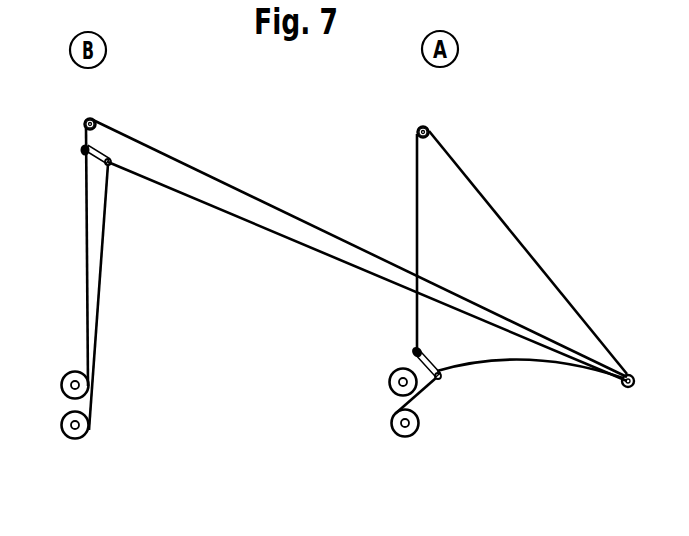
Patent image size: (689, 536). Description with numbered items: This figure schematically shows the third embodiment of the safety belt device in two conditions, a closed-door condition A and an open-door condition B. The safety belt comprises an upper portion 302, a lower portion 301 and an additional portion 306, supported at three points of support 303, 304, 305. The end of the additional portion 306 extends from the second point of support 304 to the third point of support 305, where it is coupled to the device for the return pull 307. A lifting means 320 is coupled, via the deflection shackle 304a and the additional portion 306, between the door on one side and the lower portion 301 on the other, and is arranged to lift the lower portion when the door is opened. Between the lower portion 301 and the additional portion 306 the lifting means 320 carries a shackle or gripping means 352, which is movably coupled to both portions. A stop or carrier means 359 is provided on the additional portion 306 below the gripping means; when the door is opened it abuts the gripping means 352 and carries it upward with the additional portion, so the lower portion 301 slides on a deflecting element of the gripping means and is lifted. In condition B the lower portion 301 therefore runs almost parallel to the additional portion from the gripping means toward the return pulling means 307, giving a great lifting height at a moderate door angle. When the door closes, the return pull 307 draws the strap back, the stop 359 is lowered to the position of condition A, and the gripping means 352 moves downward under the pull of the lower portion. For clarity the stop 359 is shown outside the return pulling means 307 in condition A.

The lower portion 301 is at (100, 250).
The upper portion 302 is at (189, 167).
The first point of support 303 is at (624, 390).
The second point of support 304 is at (84, 116).
The deflection shackle 304a is at (93, 119).
The third point of support 305 is at (60, 379).
The additional portion 306 is at (86, 250).
The device for the return pull 307 is at (56, 433).
The lifting means 320 is at (431, 346).
The gripping means 352 is at (84, 146).
The stop 359 is at (82, 156).